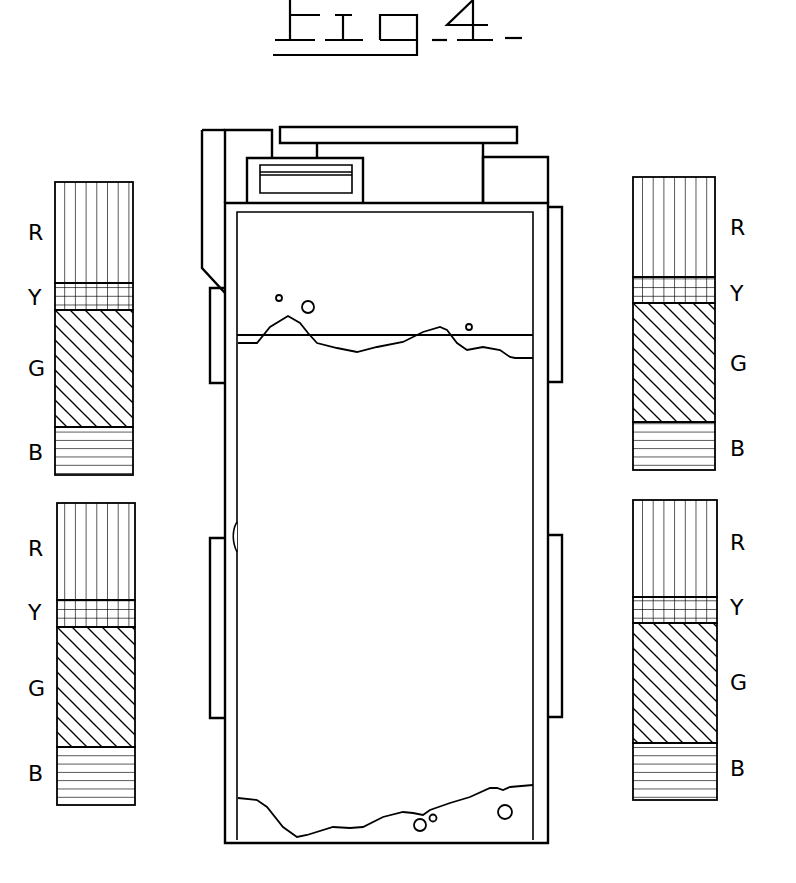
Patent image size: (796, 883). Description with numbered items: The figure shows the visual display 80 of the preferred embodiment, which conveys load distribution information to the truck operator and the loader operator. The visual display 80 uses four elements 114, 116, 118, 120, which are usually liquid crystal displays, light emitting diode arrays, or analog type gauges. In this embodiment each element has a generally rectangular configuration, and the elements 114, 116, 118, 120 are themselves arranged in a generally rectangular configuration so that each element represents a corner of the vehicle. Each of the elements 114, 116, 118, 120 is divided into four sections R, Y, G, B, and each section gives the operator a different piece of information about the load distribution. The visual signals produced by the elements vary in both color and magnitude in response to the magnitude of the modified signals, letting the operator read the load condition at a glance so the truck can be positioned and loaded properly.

The visual display 80 is at (185, 82).
The visual display element 114 is at (112, 181).
The visual display element 116 is at (124, 498).
The visual display element 118 is at (688, 176).
The visual display element 120 is at (694, 496).